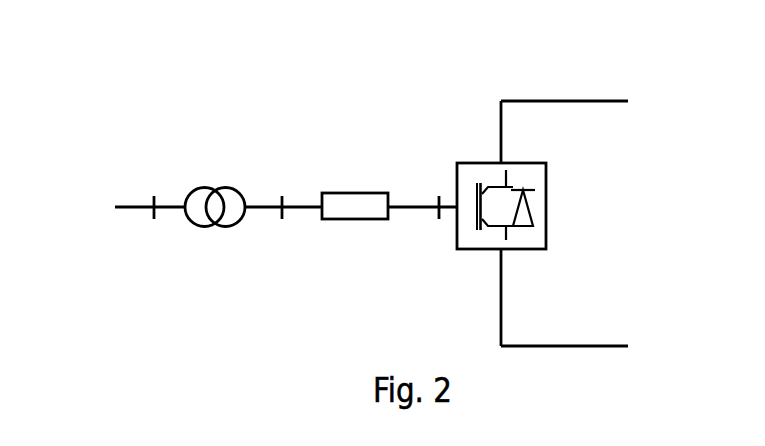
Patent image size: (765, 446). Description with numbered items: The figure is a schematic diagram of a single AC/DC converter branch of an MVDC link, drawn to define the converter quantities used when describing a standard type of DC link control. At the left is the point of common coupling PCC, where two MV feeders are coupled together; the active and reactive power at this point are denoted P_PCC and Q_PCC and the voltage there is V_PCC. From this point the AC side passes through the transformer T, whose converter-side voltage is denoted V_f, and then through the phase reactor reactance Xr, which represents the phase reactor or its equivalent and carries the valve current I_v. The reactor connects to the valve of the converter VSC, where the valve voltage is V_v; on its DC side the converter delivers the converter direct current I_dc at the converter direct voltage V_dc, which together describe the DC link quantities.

The point of common coupling PCC is at (110, 193).
The transformer (I_v, V_f) T is at (238, 172).
The phase reactor reactance Xr is at (389, 204).
The voltage source converter with IGBT (I_dc, V_dc) VSC is at (584, 255).